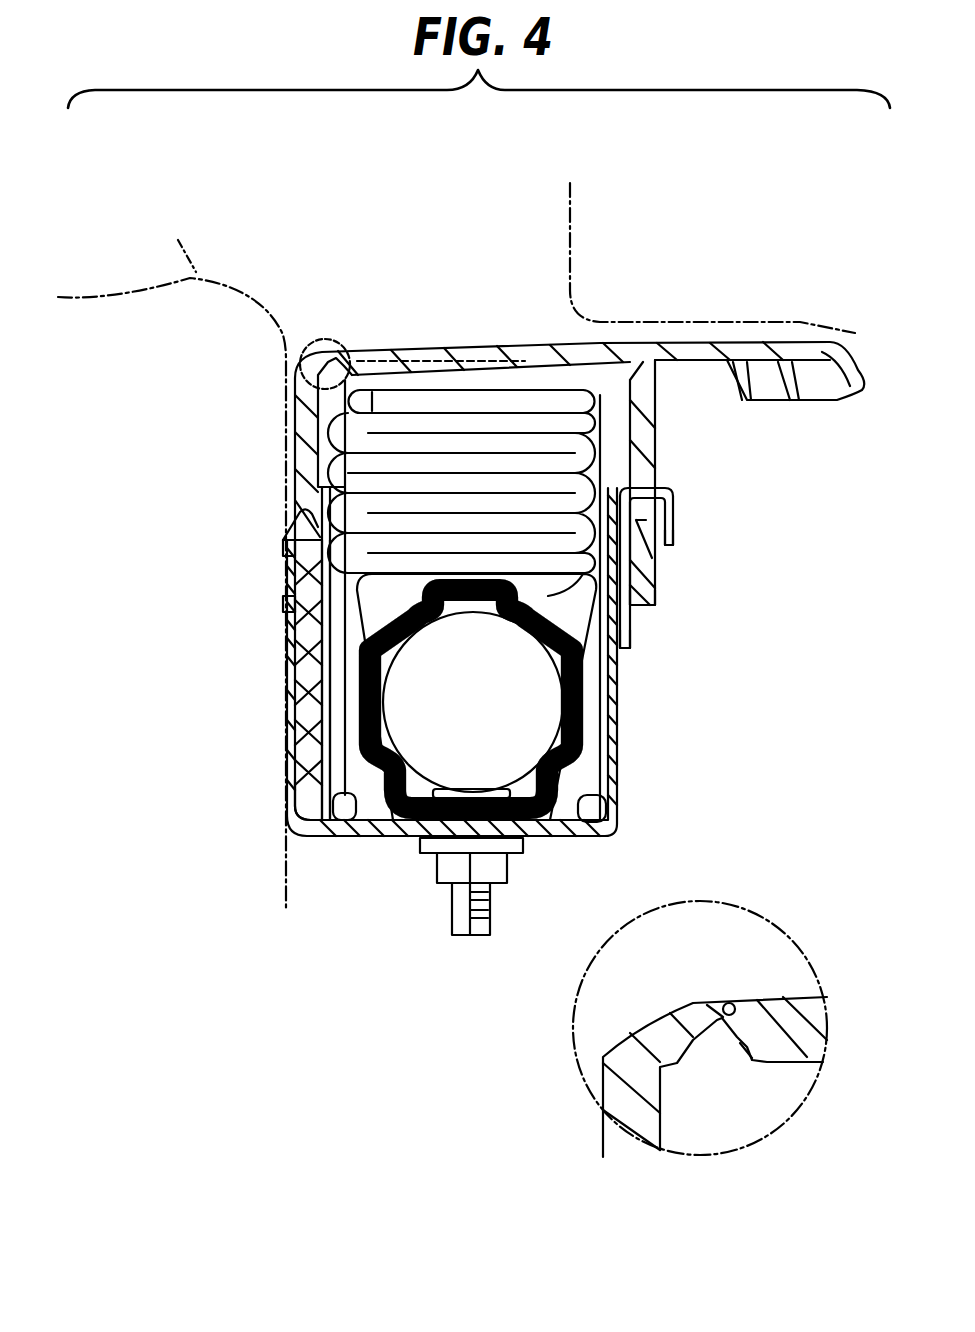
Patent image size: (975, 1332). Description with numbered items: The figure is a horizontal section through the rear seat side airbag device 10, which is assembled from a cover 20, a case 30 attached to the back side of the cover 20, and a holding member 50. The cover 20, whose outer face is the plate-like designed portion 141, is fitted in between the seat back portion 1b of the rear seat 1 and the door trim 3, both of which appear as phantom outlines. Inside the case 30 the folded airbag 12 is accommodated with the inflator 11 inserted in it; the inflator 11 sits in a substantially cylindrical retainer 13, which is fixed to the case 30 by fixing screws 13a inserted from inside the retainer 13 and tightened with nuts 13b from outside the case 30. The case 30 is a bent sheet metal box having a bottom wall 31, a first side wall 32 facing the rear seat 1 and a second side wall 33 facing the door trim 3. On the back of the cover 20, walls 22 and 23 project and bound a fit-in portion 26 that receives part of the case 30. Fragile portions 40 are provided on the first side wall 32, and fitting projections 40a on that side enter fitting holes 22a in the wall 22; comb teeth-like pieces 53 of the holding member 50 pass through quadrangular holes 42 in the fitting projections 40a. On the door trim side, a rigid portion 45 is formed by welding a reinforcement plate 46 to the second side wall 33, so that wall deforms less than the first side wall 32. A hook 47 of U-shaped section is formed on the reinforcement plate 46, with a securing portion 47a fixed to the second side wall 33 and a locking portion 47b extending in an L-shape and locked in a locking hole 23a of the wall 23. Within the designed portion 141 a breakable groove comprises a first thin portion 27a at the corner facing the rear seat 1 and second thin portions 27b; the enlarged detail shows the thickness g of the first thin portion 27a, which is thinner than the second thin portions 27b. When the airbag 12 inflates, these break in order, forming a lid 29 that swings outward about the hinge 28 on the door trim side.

The rear seat 1 is at (192, 361).
The seat back portion 1b is at (177, 240).
The door trim 3 is at (709, 268).
The rear seat side airbag device 10 is at (486, 234).
The inflator 11 is at (532, 715).
The airbag 12 is at (594, 408).
The retainer 13 is at (466, 879).
The fixing screw 13a is at (452, 906).
The nut 13b is at (493, 890).
The cover 20 is at (579, 321).
The wall 22 is at (297, 440).
The fitting hole 22a is at (282, 660).
The wall 23 is at (648, 432).
The locking hole 23a is at (642, 545).
The fit-in portion 26 is at (617, 458).
The first thin portion 27a is at (335, 357).
The second thin portion 27b is at (438, 366).
The hinge 28 is at (533, 350).
The lid 29 is at (377, 348).
The case 30 is at (600, 827).
The bottom wall 31 is at (367, 842).
The first side wall 32 is at (288, 728).
The second side wall 33 is at (619, 666).
The fragile portion 40 is at (268, 590).
The fitting projection 40a is at (278, 604).
The quadrangular hole 42 is at (285, 522).
The rigid portion 45 is at (717, 578).
The reinforcement plate 46 is at (717, 578).
The hook 47 is at (700, 508).
The securing portion 47a is at (624, 638).
The locking portion 47b is at (675, 534).
The holding member 50 is at (290, 790).
The comb teeth-like piece 53 is at (282, 552).
The designed portion 141 is at (485, 355).
The thickness of the first thin portion g is at (730, 1003).